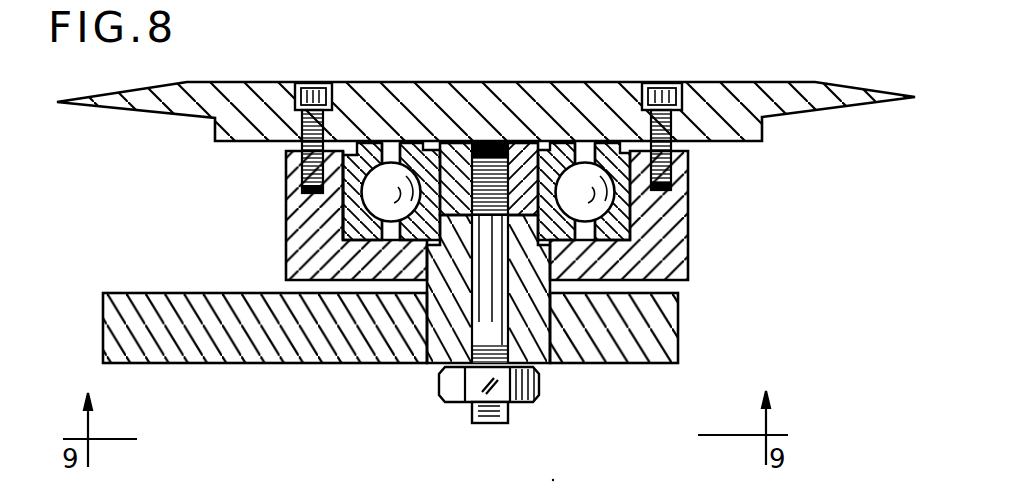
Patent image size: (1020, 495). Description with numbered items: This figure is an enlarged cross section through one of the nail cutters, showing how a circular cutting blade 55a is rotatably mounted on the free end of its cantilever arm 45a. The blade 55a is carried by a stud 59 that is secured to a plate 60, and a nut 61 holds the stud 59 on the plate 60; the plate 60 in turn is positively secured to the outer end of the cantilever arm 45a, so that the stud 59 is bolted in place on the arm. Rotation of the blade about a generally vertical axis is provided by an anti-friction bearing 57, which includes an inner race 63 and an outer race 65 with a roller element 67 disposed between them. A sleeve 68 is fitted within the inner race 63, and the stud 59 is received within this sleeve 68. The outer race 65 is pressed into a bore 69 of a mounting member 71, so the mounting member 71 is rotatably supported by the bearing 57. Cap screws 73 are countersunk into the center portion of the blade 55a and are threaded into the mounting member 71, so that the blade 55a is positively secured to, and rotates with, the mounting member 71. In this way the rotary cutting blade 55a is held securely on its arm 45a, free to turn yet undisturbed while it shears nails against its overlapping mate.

The circular cutting blade 55a is at (786, 81).
The cap screws 73 is at (310, 83).
The outer race 65 is at (357, 150).
The roller element 67 is at (386, 152).
The inner race 63 is at (426, 152).
The sleeve 68 is at (540, 148).
The anti-friction bearing 57 is at (624, 207).
The bore 69 is at (343, 210).
The mounting member 71 is at (297, 245).
The stud 59 is at (508, 328).
The nut 61 is at (440, 388).
The plate 60 is at (272, 345).
The cantilever arm 45a is at (680, 338).